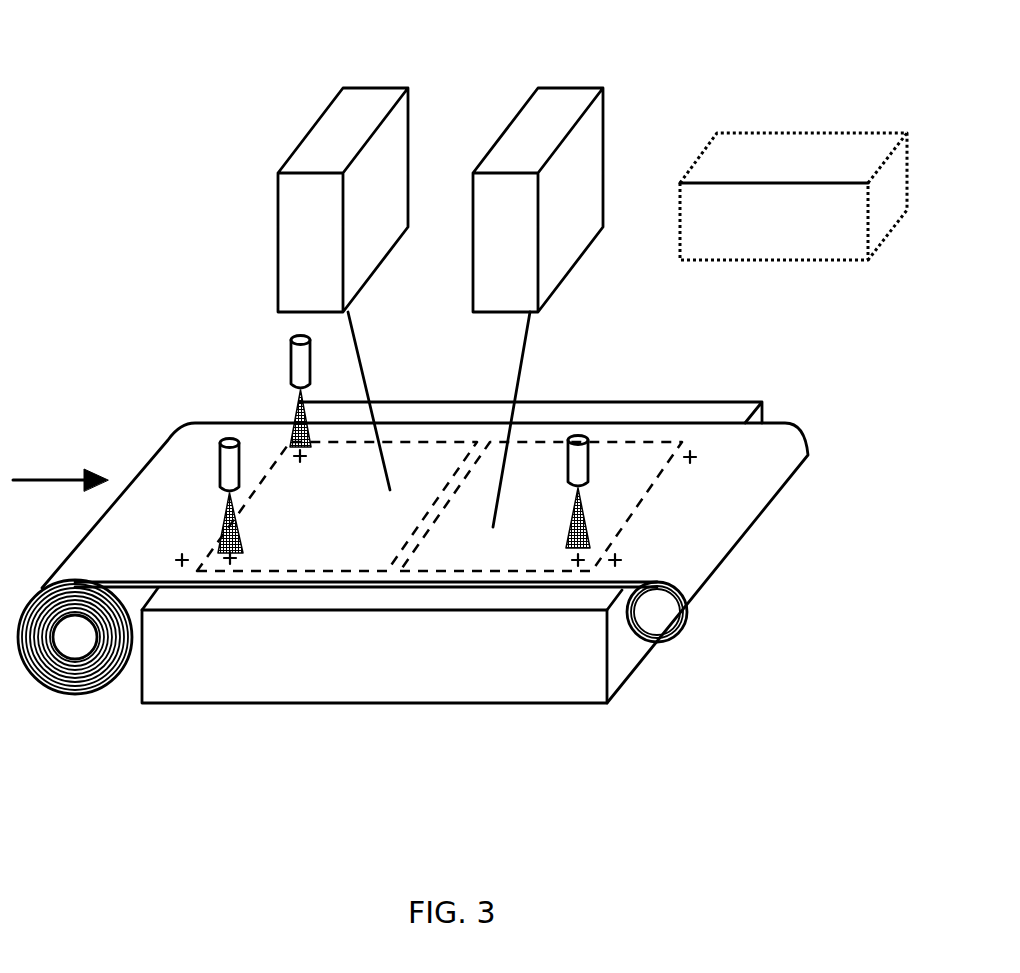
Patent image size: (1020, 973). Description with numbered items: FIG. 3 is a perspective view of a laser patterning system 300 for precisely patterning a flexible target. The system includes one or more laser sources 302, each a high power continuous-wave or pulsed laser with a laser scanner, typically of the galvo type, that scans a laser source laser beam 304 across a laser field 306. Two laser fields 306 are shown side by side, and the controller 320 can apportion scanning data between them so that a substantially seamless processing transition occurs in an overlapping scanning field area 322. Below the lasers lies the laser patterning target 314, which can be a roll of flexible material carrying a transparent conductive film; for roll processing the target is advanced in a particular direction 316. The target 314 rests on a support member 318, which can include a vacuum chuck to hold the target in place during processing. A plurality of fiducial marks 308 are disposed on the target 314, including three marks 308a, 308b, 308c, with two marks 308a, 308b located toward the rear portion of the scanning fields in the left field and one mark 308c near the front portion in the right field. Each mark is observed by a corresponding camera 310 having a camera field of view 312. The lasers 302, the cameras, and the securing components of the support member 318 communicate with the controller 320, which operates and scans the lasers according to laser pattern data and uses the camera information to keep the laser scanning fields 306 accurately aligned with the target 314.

The laser patterning system 300 is at (146, 77).
The laser source 302 is at (375, 173).
The laser source laser beam 304 is at (363, 340).
The laser field 306 is at (287, 570).
The fiducial marks 308 is at (618, 562).
The first fiducial mark 308a is at (298, 456).
The second fiducial mark 308b is at (230, 560).
The third fiducial mark 308c is at (578, 558).
The camera 310 is at (588, 463).
The camera field of view 312 is at (298, 428).
The laser patterning target 314 is at (710, 493).
The direction 316 is at (67, 478).
The support member 318 is at (183, 675).
The controller 320 is at (787, 165).
The overlapping scanning field area 322 is at (443, 490).